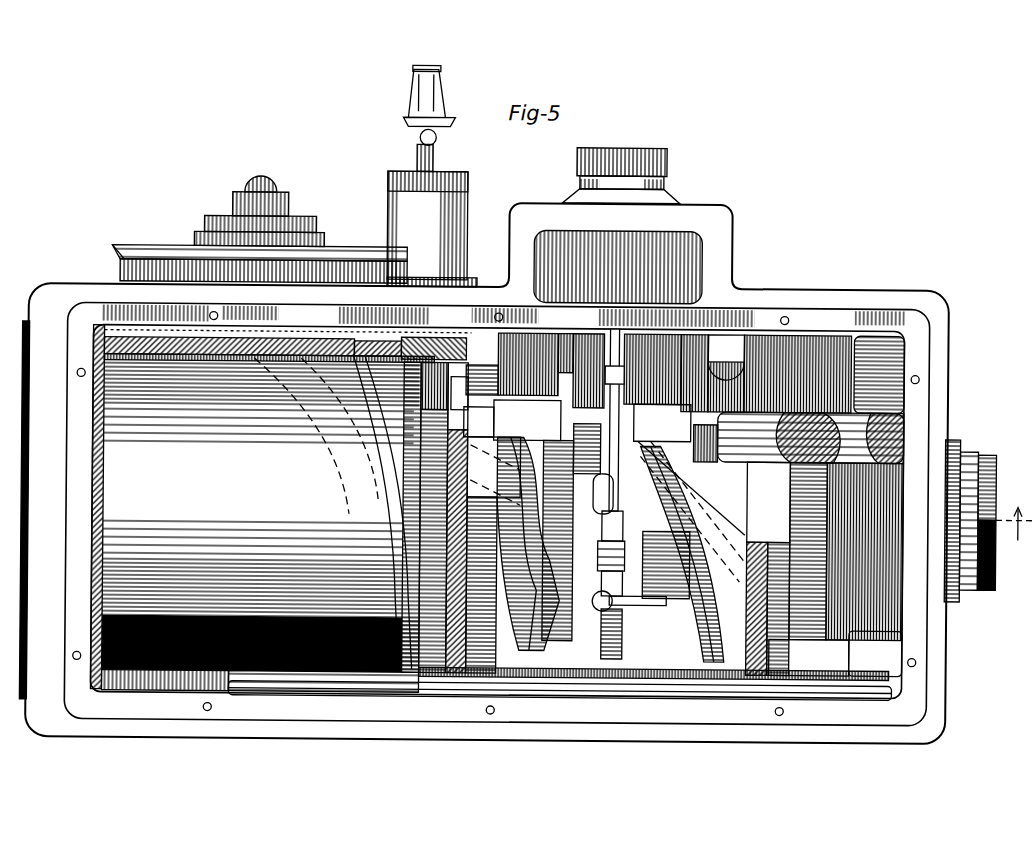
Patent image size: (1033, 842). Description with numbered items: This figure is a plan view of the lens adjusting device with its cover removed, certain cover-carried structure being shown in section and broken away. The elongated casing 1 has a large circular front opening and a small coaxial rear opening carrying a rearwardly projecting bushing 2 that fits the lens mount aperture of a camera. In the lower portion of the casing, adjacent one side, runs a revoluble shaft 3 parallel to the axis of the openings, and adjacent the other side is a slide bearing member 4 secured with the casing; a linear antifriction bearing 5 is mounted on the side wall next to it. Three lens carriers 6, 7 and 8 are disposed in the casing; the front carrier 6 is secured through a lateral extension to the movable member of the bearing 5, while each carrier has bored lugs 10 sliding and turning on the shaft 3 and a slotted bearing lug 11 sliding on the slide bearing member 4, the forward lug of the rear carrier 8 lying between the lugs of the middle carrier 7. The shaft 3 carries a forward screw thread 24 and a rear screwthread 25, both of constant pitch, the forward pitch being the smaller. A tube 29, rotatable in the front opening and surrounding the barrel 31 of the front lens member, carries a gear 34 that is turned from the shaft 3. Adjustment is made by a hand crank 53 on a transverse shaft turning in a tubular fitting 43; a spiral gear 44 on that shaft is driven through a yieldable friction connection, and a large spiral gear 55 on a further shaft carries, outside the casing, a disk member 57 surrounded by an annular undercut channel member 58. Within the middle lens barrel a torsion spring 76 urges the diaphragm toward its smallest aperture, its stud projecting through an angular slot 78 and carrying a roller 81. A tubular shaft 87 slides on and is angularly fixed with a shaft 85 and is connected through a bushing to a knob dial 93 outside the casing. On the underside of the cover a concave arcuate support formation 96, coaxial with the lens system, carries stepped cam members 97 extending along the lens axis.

The casing 1 is at (895, 294).
The bushing 2 is at (964, 594).
The revoluble shaft 3 is at (882, 427).
The slide bearing member 4 is at (833, 655).
The linear antifriction bearing 5 is at (714, 690).
The front lens carrier 6 is at (1014, 534).
The middle lens carrier 7 is at (553, 433).
The rear lens carrier 8 is at (692, 434).
The bored lugs 10 is at (506, 422).
The slotted bearing lug 11 is at (532, 665).
The screw thread 24 is at (427, 432).
The second screwthread 25 is at (892, 430).
The tube 29 is at (260, 673).
The barrel 31 is at (350, 494).
The gear 34 is at (101, 480).
The tubular fitting 43 is at (462, 204).
The spiral gear 44 is at (422, 345).
The hand crank 53 is at (431, 151).
The large spiral gear 55 is at (278, 345).
The disk member 57 is at (331, 248).
The annular undercut channel member 58 is at (133, 256).
The torsion spring 76 is at (342, 462).
The angular slot 78 is at (596, 487).
The roller 81 is at (604, 643).
The shaft 85 is at (610, 480).
The tubular shaft 87 is at (607, 330).
The knob dial 93 is at (643, 151).
The concave arcuate support formation 96 is at (458, 668).
The cam members 97 is at (665, 521).